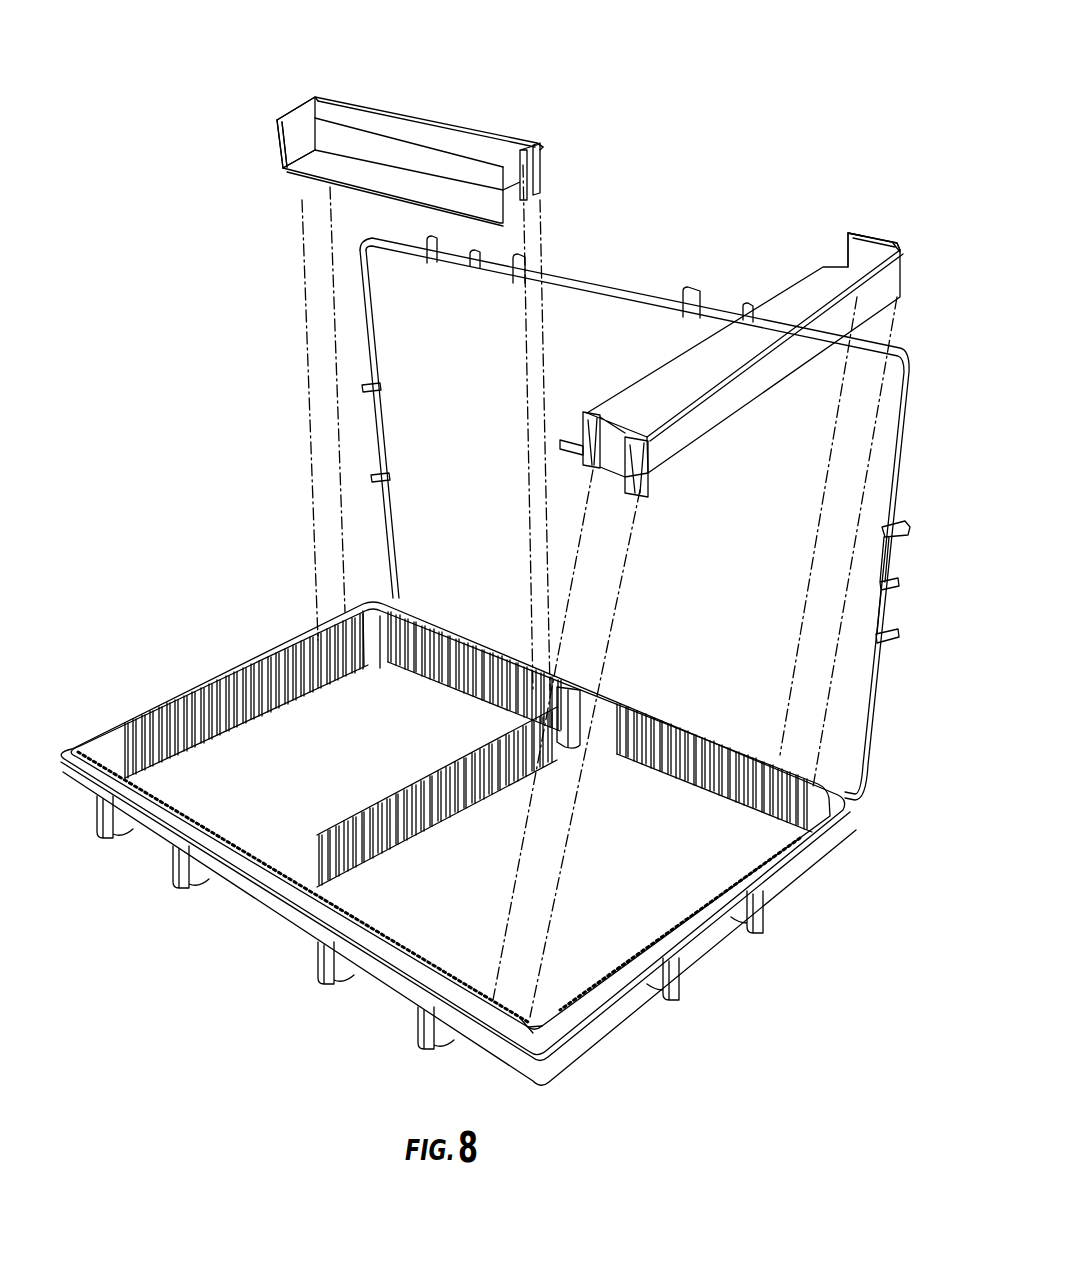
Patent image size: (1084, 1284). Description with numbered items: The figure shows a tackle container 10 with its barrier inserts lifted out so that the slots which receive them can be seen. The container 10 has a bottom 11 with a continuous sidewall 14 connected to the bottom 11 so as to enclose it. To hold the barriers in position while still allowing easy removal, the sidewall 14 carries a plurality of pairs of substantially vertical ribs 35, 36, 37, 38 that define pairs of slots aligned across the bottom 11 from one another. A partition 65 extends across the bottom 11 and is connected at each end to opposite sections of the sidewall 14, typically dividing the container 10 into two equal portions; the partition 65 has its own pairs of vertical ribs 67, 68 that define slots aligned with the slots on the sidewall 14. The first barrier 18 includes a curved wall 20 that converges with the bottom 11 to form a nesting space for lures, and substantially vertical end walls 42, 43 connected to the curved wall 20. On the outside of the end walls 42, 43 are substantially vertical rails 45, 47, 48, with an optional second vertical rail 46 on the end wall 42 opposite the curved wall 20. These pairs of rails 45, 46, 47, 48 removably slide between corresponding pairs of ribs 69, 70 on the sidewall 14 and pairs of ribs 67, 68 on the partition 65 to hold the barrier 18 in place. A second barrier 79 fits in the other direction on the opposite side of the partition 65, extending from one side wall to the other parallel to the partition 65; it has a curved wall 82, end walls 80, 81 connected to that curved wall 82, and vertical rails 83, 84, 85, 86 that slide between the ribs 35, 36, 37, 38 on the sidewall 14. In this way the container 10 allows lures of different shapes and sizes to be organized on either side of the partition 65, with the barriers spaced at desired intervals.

The tackle container 10 is at (578, 234).
The bottom 11 is at (288, 776).
The sidewall 14 is at (458, 843).
The barrier 18 is at (411, 115).
The curved wall 20 is at (368, 148).
The vertical rib 35 is at (520, 1017).
The vertical rib 36 is at (533, 1027).
The vertical rib 37 is at (610, 721).
The vertical rib 38 is at (813, 787).
The end wall 42 is at (290, 108).
The end wall 43 is at (540, 143).
The vertical rail 45 is at (287, 112).
The second vertical rail 46 is at (295, 100).
The vertical rail 47 is at (520, 157).
The vertical rail 48 is at (543, 147).
The partition 65 is at (570, 683).
The vertical rib 67 is at (437, 782).
The vertical rib 68 is at (417, 773).
The rib 69 is at (246, 679).
The rib 70 is at (233, 677).
The barrier 79 is at (743, 311).
The end wall 80 is at (857, 196).
The end wall 81 is at (630, 371).
The curved wall 82 is at (762, 372).
The vertical rail 83 is at (863, 233).
The vertical rail 84 is at (893, 243).
The vertical rail 85 is at (627, 437).
The vertical rail 86 is at (598, 470).